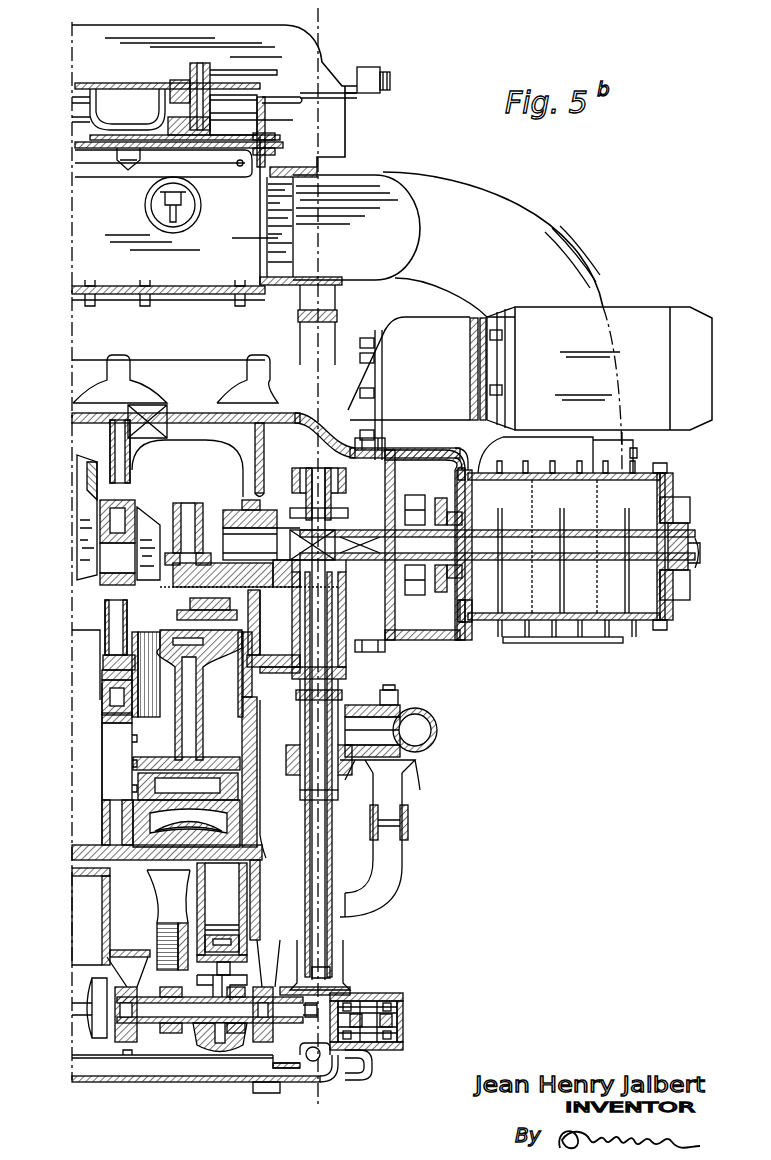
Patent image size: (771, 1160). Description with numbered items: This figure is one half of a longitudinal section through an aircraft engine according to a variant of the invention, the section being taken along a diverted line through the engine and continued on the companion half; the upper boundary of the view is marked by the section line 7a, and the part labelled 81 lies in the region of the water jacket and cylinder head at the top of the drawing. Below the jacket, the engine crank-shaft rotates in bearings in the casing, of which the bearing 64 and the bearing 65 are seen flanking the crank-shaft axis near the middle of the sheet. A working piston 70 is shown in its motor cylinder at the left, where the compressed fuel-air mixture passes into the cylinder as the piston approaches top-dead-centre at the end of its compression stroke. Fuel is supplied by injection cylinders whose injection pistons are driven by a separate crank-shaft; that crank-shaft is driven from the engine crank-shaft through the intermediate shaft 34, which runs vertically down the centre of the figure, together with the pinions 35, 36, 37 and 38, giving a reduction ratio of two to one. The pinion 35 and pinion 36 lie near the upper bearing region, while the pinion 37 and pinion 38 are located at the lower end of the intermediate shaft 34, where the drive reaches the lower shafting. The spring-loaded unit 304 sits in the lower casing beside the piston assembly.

The section line 7a is at (338, 571).
The carburetor housing 8_1 81 is at (330, 131).
The pinion 35 is at (290, 510).
The bearing 64 is at (103, 585).
The bearing 65 is at (310, 612).
The pinion 36 is at (310, 636).
The working piston 70 is at (248, 826).
The intermediate shaft 34 is at (318, 851).
The spring-loaded valve assembly 30^4 304 is at (207, 891).
The pinion 37 is at (333, 972).
The pinion 38 is at (325, 1060).